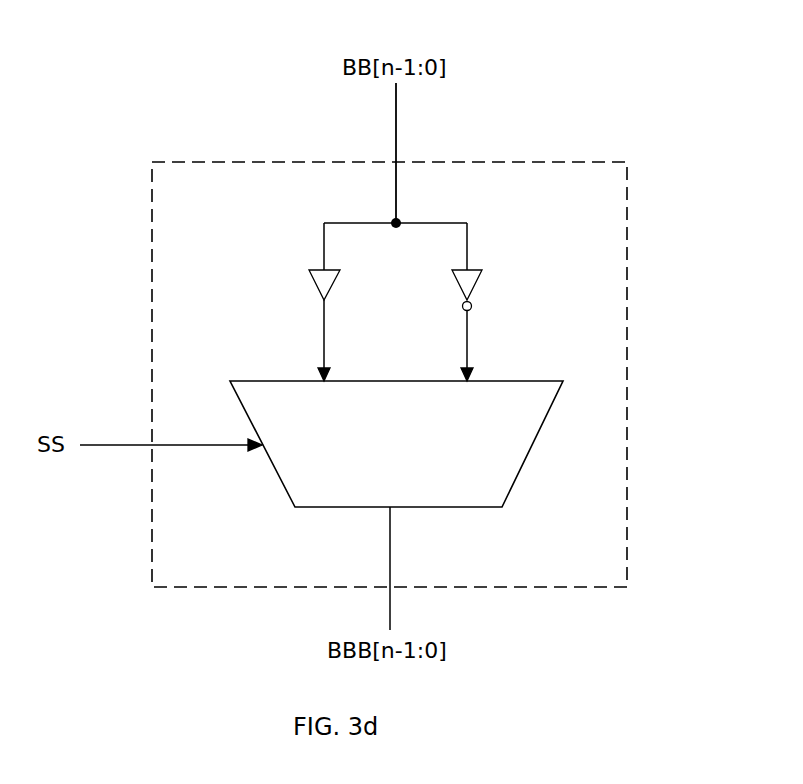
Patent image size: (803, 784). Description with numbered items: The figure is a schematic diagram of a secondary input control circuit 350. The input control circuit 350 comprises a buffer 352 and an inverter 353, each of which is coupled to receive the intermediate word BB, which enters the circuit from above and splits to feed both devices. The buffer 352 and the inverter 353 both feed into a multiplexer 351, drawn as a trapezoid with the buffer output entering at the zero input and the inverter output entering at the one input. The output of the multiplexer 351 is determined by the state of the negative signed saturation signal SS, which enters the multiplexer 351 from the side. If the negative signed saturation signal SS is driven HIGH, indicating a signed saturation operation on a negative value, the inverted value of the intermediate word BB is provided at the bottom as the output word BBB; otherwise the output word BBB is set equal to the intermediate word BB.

The secondary input control circuit 350 is at (208, 160).
The multiplexer 351 is at (412, 456).
The buffer 352 is at (318, 268).
The inverter 353 is at (472, 268).